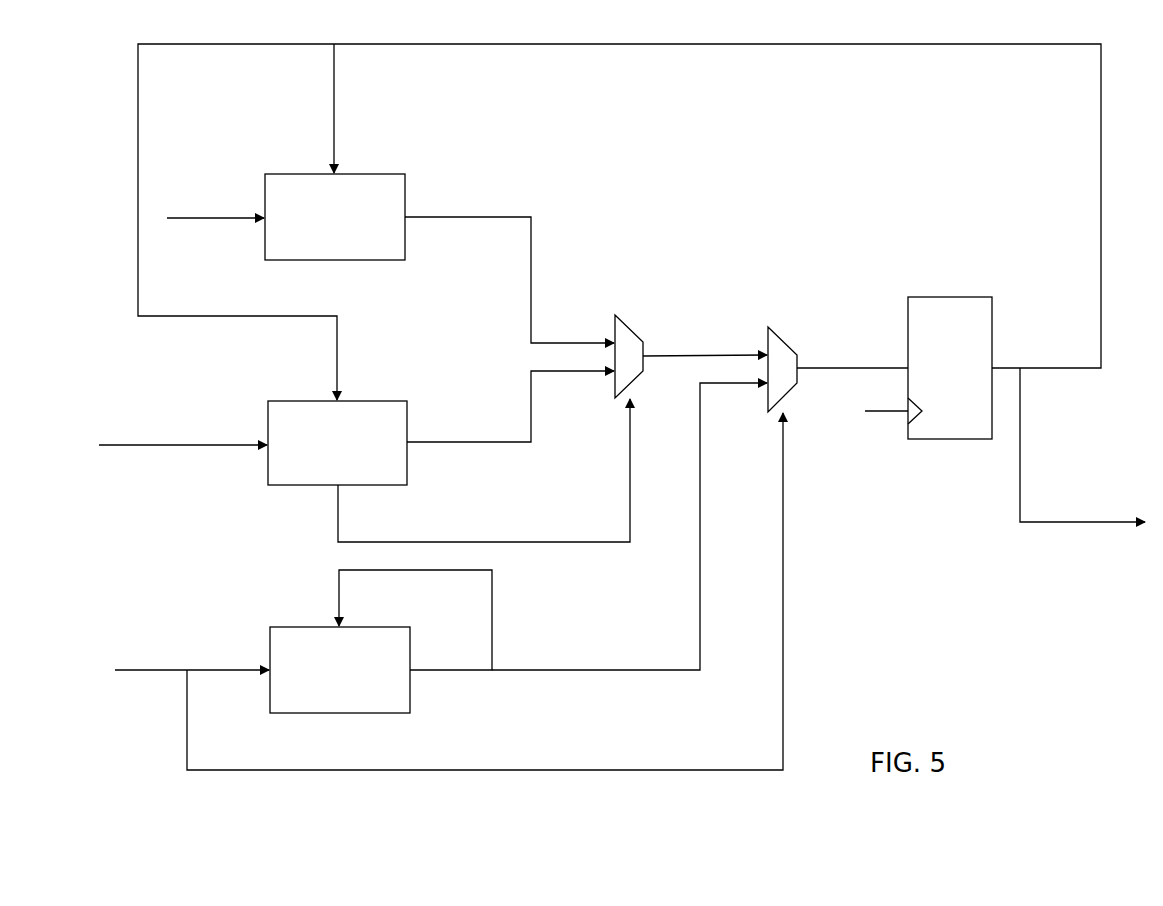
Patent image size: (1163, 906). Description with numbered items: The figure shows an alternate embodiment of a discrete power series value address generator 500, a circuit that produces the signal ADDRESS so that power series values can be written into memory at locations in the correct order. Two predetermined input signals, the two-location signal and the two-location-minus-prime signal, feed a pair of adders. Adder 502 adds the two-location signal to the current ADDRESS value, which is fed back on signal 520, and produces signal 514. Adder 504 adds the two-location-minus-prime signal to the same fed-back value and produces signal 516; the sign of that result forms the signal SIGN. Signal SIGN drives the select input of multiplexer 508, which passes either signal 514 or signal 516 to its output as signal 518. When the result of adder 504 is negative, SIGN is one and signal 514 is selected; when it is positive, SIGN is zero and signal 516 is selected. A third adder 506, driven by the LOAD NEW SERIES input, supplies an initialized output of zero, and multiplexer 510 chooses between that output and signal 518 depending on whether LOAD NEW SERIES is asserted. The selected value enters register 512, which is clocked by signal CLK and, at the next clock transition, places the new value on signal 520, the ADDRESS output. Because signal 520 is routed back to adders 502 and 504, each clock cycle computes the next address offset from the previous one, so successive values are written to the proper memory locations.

The PSV address generator 500 is at (996, 667).
The adder 502 is at (378, 173).
The adder 504 is at (380, 400).
The adder 506 is at (383, 626).
The multiplexer 508 is at (630, 322).
The multiplexer 510 is at (783, 337).
The register 512 is at (962, 296).
The signal 514 is at (487, 216).
The signal 516 is at (462, 441).
The signal 518 is at (688, 355).
The signal 520 is at (793, 43).